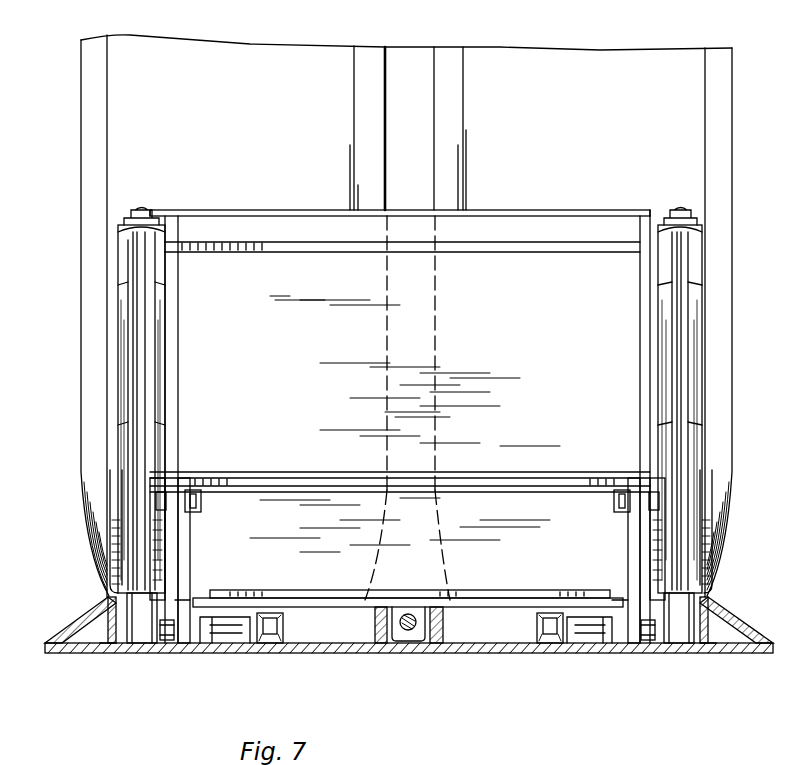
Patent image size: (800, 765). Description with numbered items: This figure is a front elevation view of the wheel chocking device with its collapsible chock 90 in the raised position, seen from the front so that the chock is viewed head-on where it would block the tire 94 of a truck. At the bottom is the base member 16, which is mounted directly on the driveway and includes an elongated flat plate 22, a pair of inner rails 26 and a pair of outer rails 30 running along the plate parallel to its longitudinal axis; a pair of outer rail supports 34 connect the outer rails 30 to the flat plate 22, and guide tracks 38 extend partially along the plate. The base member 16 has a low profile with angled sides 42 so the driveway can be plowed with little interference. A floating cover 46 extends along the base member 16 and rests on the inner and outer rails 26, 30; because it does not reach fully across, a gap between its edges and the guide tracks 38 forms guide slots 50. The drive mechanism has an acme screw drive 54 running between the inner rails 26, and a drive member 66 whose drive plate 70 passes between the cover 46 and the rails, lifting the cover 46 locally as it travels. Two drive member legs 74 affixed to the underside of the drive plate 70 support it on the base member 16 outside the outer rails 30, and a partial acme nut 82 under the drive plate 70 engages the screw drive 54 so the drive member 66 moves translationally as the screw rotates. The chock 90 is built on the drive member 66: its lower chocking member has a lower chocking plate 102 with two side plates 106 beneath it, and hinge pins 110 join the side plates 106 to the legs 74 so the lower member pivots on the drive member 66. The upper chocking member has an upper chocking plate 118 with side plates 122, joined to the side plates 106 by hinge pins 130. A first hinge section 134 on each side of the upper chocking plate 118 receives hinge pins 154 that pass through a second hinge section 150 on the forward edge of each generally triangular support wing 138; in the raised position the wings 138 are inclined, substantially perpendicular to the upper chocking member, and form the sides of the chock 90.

The tire 94 is at (81, 57).
The hinge pins 154 is at (140, 212).
The first hinge section 134 is at (118, 243).
The support wings 138 is at (140, 370).
The second hinge section 150 is at (118, 326).
The side plates 122 is at (172, 387).
The upper chocking plate 118 is at (500, 304).
The lower chocking plate 102 is at (505, 526).
The collapsible chock 90 is at (752, 390).
The side plates 106 is at (185, 548).
The hinge pins 130 is at (201, 504).
The guide slots 50 is at (158, 606).
The floating cover 46 is at (497, 598).
The drive plate 70 is at (370, 618).
The inner rails 26 is at (437, 612).
The partial acme nut 82 is at (418, 632).
The acme screw drive 54 is at (405, 630).
The outer rail supports 34 is at (272, 644).
The outer rails 30 is at (245, 645).
The hinge pins 110 is at (148, 648).
The drive member legs 74 is at (167, 645).
The flat plate 22 is at (70, 655).
The angled sides 42 is at (80, 618).
The guide tracks 38 is at (108, 652).
The base member 16 is at (790, 568).
The drive member 66 is at (485, 657).